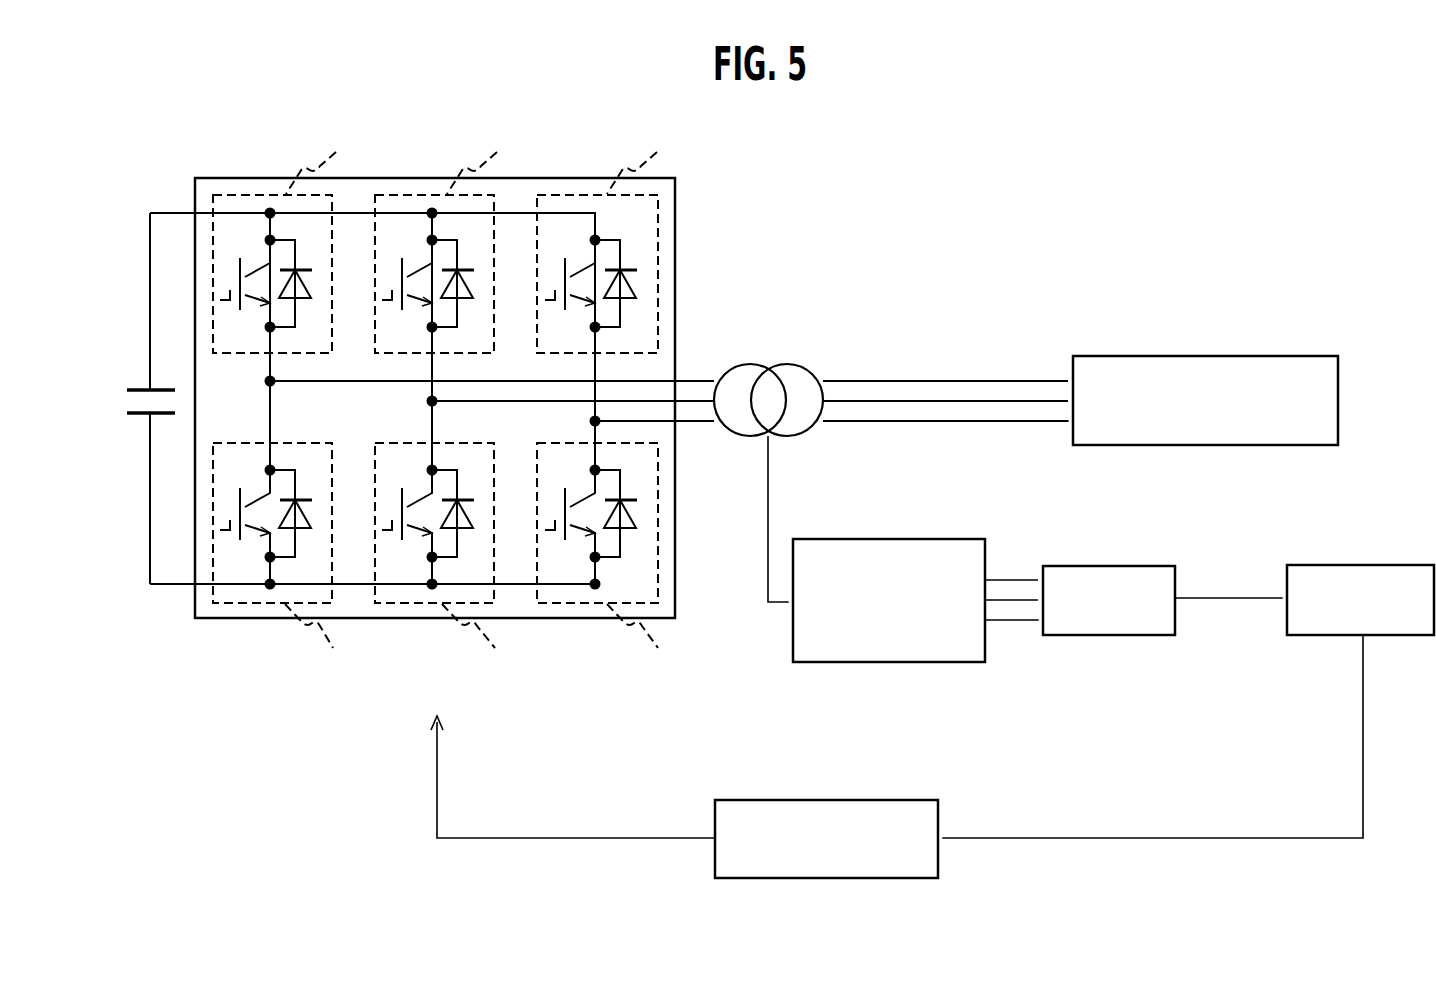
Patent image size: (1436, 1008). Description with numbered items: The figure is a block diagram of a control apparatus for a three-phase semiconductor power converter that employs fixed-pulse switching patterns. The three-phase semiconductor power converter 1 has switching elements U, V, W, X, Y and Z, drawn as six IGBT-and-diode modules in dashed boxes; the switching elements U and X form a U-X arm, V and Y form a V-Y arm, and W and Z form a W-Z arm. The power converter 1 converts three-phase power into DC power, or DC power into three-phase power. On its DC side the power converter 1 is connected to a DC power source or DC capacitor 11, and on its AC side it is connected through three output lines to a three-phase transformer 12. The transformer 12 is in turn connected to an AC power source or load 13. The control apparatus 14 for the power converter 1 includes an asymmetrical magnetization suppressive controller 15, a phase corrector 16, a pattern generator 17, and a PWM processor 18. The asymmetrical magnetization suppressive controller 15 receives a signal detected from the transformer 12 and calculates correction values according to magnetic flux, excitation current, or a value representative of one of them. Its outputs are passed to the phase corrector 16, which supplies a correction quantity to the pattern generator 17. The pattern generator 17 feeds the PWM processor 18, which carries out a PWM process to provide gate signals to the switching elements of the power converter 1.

The three-phase semiconductor power converter 1 is at (675, 243).
The DC capacitor 11 is at (138, 385).
The three-phase transformer 12 is at (788, 367).
The AC power source or load 13 is at (1231, 355).
The control apparatus 14 is at (1123, 717).
The asymmetrical magnetization suppressive controller 15 is at (889, 538).
The phase corrector 16 is at (1084, 567).
The pattern generator 17 is at (1359, 562).
The PWM processor 18 is at (868, 798).